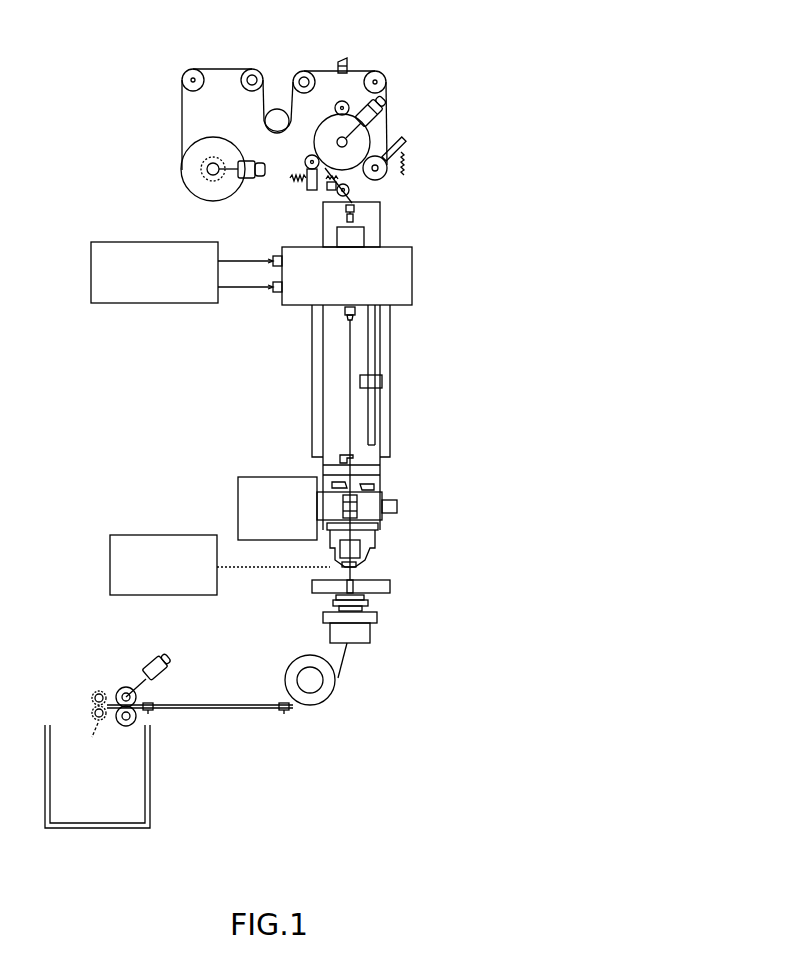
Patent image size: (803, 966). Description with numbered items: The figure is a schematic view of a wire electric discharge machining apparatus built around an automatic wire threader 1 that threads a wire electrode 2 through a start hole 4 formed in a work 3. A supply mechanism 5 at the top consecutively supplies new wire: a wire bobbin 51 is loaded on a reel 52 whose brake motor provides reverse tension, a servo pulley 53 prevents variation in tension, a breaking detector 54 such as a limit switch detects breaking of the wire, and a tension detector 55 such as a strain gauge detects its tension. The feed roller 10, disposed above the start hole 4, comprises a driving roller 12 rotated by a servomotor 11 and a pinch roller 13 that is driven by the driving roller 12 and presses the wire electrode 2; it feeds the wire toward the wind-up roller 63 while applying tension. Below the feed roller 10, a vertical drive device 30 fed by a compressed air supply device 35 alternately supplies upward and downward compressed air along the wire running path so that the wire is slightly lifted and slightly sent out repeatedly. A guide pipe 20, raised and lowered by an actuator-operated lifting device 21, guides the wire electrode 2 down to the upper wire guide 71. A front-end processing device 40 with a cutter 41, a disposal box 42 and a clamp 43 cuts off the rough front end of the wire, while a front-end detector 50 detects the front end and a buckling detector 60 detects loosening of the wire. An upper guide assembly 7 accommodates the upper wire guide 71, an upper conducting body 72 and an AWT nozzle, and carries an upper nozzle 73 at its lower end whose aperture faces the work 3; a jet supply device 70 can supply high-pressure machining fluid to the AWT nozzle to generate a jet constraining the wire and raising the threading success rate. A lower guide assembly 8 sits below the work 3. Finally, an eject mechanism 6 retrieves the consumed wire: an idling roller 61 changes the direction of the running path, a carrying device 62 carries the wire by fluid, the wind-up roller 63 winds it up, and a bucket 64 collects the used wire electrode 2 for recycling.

The automatic wire threader 1 is at (412, 234).
The wire electrode 2 is at (226, 64).
The work 3 is at (318, 594).
The start hole 4 is at (362, 598).
The supply mechanism 5 is at (258, 58).
The eject mechanism 6 is at (201, 748).
The upper guide assembly 7 is at (377, 567).
The lower guide assembly 8 is at (372, 636).
The feed roller 10 is at (358, 176).
The servomotor 11 is at (382, 103).
The driving roller 12 is at (368, 142).
The pinch roller 13 is at (306, 155).
The guide pipe 20 is at (348, 371).
The lifting device 21 is at (377, 368).
The vertical drive device 30 is at (414, 273).
The compressed air supply device 35 is at (206, 245).
The front-end processing device 40 is at (298, 470).
The cutter 41 is at (384, 485).
The disposal box 42 is at (272, 477).
The clamp 43 is at (398, 507).
The front-end detector 50 is at (358, 517).
The wire bobbin 51 is at (208, 202).
The reel 52 is at (202, 176).
The servo pulley 53 is at (263, 124).
The breaking detector 54 is at (348, 60).
The tension detector 55 is at (324, 188).
The buckling detector 60 is at (340, 222).
The idling roller 61 is at (298, 665).
The carrying device 62 is at (216, 709).
The wind-up roller 63 is at (117, 687).
The bucket 64 is at (153, 765).
The jet supply device 70 is at (172, 534).
The upper wire guide 71 is at (366, 573).
The upper conducting body 72 is at (370, 550).
The upper nozzle 73 is at (356, 586).